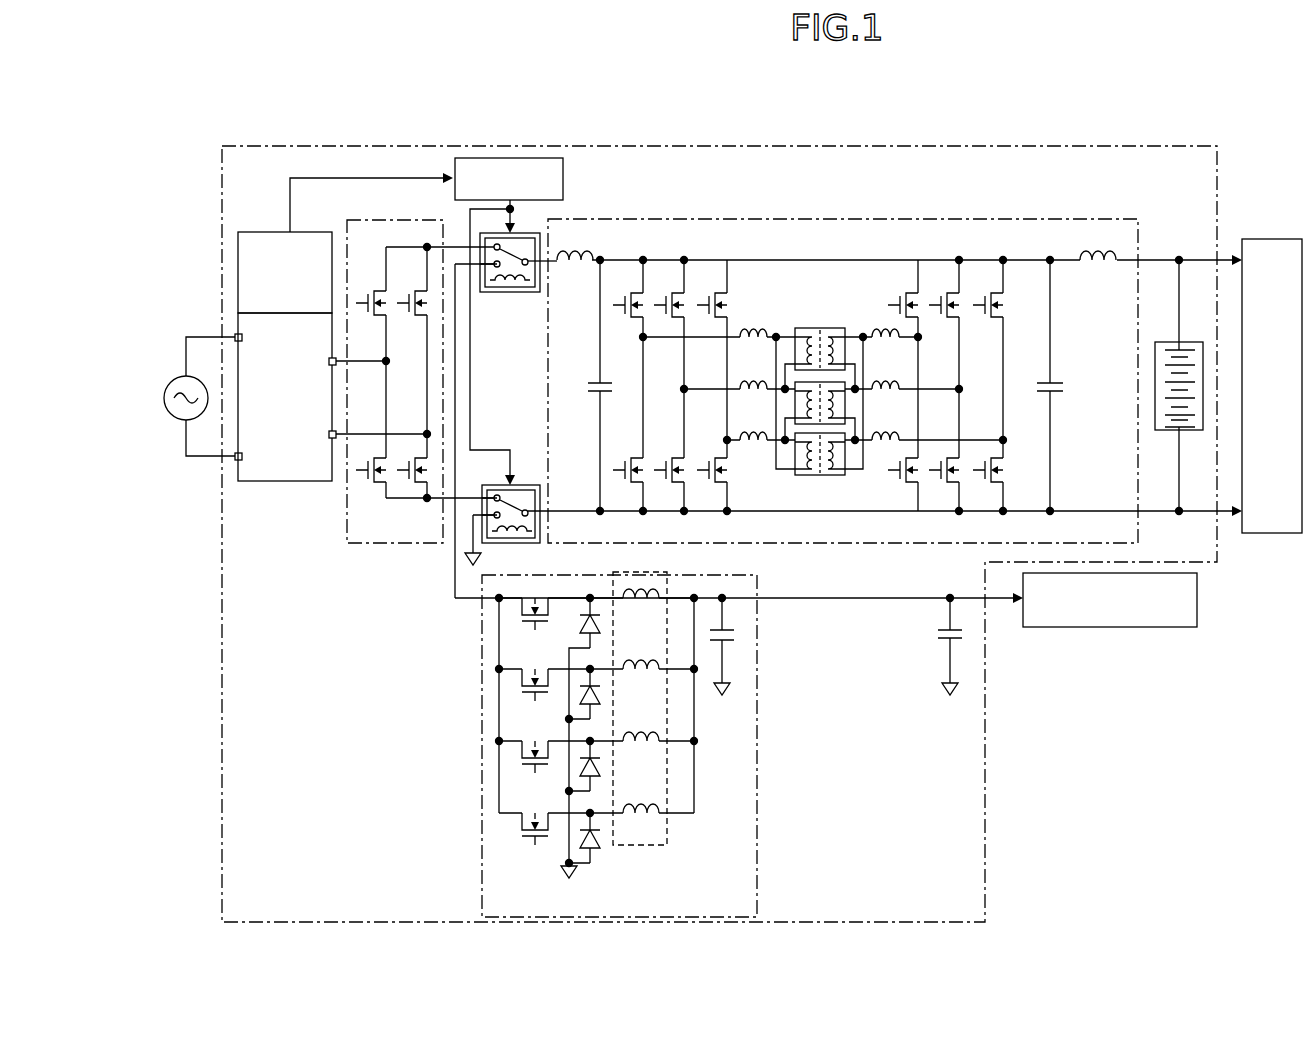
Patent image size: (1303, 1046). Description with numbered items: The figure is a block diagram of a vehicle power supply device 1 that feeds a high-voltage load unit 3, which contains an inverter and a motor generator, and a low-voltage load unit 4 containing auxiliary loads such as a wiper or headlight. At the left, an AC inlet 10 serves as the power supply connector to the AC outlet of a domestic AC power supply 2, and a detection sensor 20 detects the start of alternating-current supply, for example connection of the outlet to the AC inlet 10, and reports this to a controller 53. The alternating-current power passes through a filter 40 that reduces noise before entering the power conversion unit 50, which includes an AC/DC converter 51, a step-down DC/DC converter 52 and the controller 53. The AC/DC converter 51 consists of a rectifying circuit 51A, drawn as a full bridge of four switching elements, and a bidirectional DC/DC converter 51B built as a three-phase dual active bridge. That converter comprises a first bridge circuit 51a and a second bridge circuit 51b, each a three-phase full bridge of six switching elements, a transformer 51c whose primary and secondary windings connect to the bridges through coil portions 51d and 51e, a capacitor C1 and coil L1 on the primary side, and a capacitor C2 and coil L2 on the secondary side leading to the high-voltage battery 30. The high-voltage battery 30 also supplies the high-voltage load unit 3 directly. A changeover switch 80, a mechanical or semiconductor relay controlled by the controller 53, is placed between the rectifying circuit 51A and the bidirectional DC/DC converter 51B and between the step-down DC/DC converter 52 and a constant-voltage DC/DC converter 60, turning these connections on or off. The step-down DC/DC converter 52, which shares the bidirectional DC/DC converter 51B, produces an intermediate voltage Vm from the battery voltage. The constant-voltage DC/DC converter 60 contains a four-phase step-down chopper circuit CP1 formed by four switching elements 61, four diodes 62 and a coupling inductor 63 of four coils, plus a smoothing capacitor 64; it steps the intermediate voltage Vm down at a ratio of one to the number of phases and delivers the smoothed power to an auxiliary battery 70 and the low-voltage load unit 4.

The vehicle power supply device 1 is at (1035, 146).
The AC power supply 2 is at (175, 376).
The high-voltage load unit 3 is at (1255, 239).
The low-voltage load unit 4 is at (1112, 627).
The AC inlet 10 is at (236, 337).
The detection sensor 20 is at (273, 232).
The high-voltage battery 30 is at (1200, 342).
The filter 40 is at (287, 482).
The power conversion unit 50 is at (482, 55).
The AC/DC converter 51 is at (397, 104).
The rectifying circuit 51A is at (395, 220).
The bidirectional DC/DC converter 51B is at (541, 351).
The first bridge circuit 51a is at (727, 250).
The second bridge circuit 51b is at (1015, 250).
The transformer 51c is at (795, 331).
The coil portion 51d is at (765, 331).
The coil portion 51e is at (900, 331).
The step-down DC/DC converter 52 is at (895, 359).
The controller 53 is at (563, 180).
The constant-voltage DC/DC converter 60 is at (610, 744).
The switching elements 61 is at (513, 842).
The diodes 62 is at (577, 870).
The coupling inductor 63 is at (640, 847).
The smoothing capacitor 64 is at (730, 646).
The auxiliary battery 70 is at (946, 632).
The changeover switch 80 is at (508, 295).
The coil L1 is at (578, 270).
The coil L2 is at (1097, 250).
The capacitor C1 is at (599, 380).
The capacitor C2 is at (1052, 382).
The intermediate voltage Vm is at (455, 598).
The step-down chopper circuit CP1 is at (655, 897).